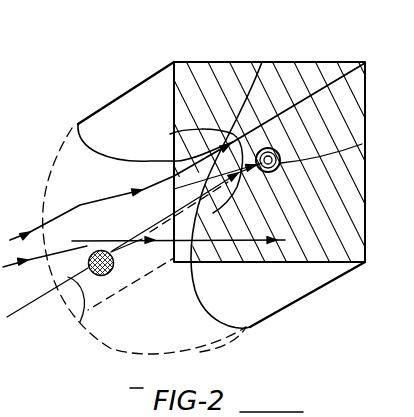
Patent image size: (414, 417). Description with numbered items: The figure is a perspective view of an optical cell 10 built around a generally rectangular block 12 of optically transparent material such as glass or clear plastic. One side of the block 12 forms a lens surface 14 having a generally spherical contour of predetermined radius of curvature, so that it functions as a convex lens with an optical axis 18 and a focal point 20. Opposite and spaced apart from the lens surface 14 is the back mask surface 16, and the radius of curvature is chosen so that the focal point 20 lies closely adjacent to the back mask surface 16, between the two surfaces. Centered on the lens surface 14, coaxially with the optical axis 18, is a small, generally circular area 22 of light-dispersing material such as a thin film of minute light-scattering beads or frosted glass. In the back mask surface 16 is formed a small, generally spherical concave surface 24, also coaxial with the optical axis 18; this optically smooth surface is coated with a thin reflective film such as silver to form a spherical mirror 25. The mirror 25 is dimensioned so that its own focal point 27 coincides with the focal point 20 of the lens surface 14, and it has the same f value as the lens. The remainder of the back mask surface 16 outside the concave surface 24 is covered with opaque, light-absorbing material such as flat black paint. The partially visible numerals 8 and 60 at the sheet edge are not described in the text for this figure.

The optical cell 10 is at (78, 124).
The block 12 is at (143, 98).
The lens surface 14 is at (207, 330).
The back mask surface 16 is at (218, 78).
The optical axis 18 is at (76, 301).
The focal point 20 is at (178, 196).
The light-dispersing area 22 is at (52, 266).
The concave surface 24 is at (262, 62).
The spherical mirror 25 is at (362, 144).
The focal point of the mirror 27 is at (172, 135).
The partial numeral 8 is at (4, 408).
The partial numeral 60 is at (22, 414).